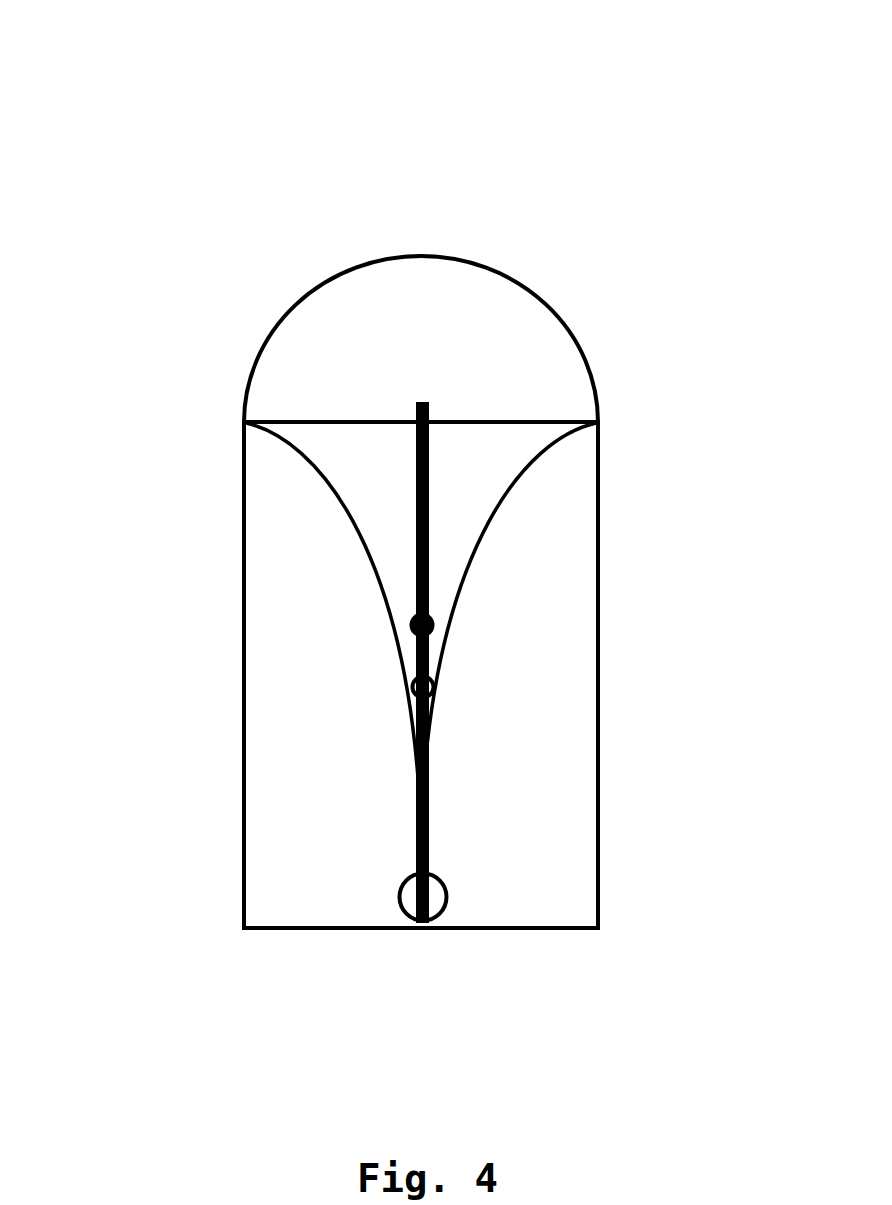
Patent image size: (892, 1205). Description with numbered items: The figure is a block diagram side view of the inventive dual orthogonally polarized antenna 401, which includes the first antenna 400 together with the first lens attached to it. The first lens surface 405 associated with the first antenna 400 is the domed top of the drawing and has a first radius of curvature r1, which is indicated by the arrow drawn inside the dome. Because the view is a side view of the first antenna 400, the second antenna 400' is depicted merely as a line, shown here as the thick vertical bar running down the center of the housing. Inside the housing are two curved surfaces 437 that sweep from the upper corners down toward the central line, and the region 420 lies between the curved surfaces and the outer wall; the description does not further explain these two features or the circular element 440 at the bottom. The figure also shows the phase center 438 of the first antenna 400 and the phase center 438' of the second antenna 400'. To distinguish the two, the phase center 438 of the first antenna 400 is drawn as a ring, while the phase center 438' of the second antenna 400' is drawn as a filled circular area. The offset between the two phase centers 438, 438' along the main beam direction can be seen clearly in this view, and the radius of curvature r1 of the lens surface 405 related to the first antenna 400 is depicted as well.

The dual orthogonally polarized antenna 401 is at (96, 108).
The first lens surface 405 is at (377, 248).
The first radius of curvature r1 is at (518, 297).
The first antenna 400 is at (385, 668).
The second antenna 400' is at (563, 662).
The interior chamber 420 is at (565, 595).
The curved guide surfaces 437 is at (373, 482).
The phase center of the second antenna 438' is at (292, 620).
The phase center of the first antenna 438 is at (550, 767).
The outlet port 440 is at (398, 892).